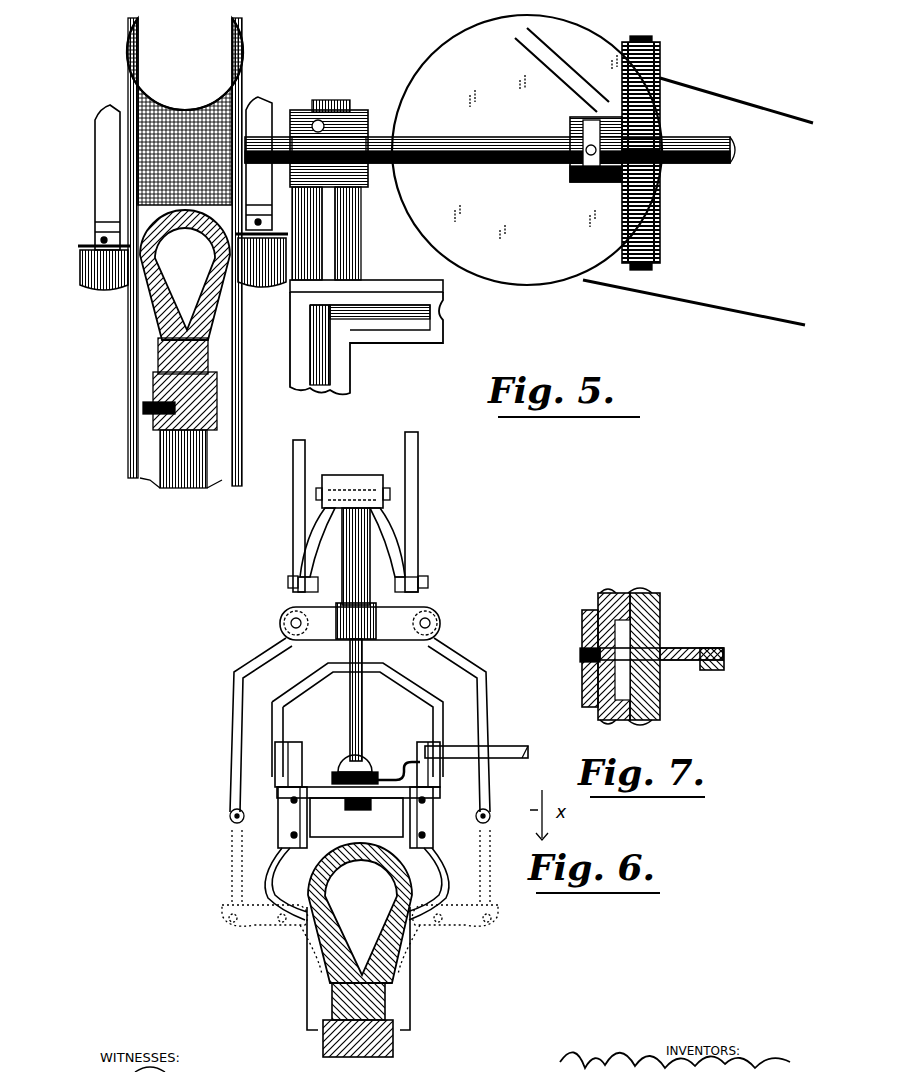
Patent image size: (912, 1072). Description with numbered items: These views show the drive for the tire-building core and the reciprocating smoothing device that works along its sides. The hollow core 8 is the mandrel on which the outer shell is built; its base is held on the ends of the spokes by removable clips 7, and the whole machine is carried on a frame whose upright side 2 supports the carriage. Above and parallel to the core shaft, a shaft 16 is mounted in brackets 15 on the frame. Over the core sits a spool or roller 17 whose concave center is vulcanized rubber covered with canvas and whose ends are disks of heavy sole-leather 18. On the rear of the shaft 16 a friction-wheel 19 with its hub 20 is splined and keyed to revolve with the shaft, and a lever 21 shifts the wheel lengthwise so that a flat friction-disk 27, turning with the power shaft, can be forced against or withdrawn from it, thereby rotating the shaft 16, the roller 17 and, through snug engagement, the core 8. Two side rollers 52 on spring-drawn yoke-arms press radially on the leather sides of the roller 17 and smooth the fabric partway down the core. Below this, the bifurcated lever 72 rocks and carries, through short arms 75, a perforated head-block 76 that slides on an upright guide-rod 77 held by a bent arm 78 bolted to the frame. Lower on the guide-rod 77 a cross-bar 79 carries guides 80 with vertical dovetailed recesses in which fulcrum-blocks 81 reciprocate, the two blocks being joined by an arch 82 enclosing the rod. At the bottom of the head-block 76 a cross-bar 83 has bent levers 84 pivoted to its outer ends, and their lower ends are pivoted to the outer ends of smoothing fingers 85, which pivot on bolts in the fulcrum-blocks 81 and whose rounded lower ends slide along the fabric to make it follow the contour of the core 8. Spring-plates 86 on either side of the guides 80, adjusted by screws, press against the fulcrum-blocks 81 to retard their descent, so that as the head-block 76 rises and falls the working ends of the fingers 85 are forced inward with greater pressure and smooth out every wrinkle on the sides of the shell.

In FIG. 5, the upright side of the frame 2 is at (366, 343).
In FIG. 5, the clips 7 is at (152, 396).
In FIG. 5, the core 8 is at (185, 275).
In FIG. 6, the core 8 is at (359, 950).
In FIG. 5, the brackets 15 is at (328, 108).
In FIG. 5, the shaft 16 is at (734, 150).
In FIG. 5, the spool or roller 17 is at (197, 112).
In FIG. 5, the sole-leather disks 18 is at (199, 252).
In FIG. 5, the friction-wheel 19 is at (658, 242).
In FIG. 5, the hub 20 is at (608, 184).
In FIG. 5, the lever 21 is at (556, 52).
In FIG. 5, the friction-disk 27 is at (527, 150).
In FIG. 5, the side rollers 52 is at (80, 272).
In FIG. 6, the bifurcated lever 72 is at (292, 528).
In FIG. 6, the short arms 75 is at (306, 558).
In FIG. 6, the head-block 76 is at (362, 476).
In FIG. 6, the guide-rod 77 is at (364, 704).
In FIG. 6, the bent arm 78 is at (487, 765).
In FIG. 6, the cross-bar 79 is at (352, 812).
In FIG. 7, the cross-bar 79 is at (582, 640).
In FIG. 7, the guides 80 is at (602, 598).
In FIG. 6, the fulcrum-blocks 81 is at (422, 748).
In FIG. 7, the fulcrum-blocks 81 is at (660, 614).
In FIG. 6, the arch 82 is at (284, 700).
In FIG. 6, the cross-bar 83 is at (437, 616).
In FIG. 6, the bent levers 84 is at (357, 724).
In FIG. 7, the bent levers 84 is at (724, 668).
In FIG. 6, the smoothing fingers 85 is at (266, 868).
In FIG. 7, the smoothing fingers 85 is at (683, 657).
In FIG. 6, the spring-plates 86 is at (410, 830).
In FIG. 7, the spring-plates 86 is at (686, 722).